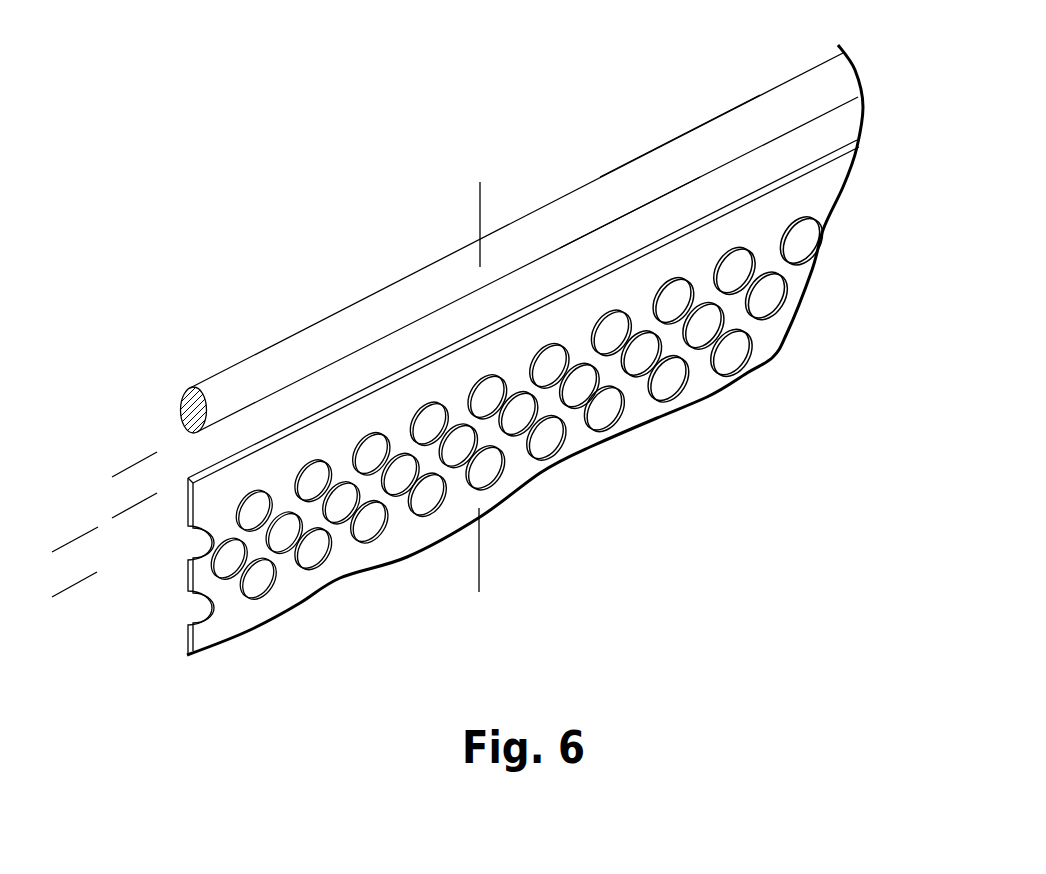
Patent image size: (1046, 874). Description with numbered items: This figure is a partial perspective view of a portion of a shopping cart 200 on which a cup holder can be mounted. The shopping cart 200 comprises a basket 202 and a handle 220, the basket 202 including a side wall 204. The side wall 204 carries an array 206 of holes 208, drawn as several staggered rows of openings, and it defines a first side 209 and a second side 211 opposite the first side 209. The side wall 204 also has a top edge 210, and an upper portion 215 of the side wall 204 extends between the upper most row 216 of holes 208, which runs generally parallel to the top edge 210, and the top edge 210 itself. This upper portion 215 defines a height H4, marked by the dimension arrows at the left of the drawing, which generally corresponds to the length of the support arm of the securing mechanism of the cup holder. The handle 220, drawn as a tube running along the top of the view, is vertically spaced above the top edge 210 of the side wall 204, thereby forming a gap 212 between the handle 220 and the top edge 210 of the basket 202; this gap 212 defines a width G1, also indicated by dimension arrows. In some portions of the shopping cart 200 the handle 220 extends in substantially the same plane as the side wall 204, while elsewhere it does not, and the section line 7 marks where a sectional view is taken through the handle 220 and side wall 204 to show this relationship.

The shopping cart 200 is at (338, 298).
The basket 202 is at (788, 212).
The side wall 204 is at (628, 283).
The array 206 is at (780, 312).
The holes 208 is at (637, 378).
The first side 209 is at (550, 410).
The top edge 210 is at (862, 128).
The second side 211 is at (188, 482).
The gap 212 is at (561, 290).
The upper portion 215 is at (775, 238).
The upper most row 216 is at (823, 233).
The handle 220 is at (670, 145).
The section line 7- 7 is at (466, 215).
The width of gap G1 is at (133, 407).
The height of upper portion H4 is at (73, 483).